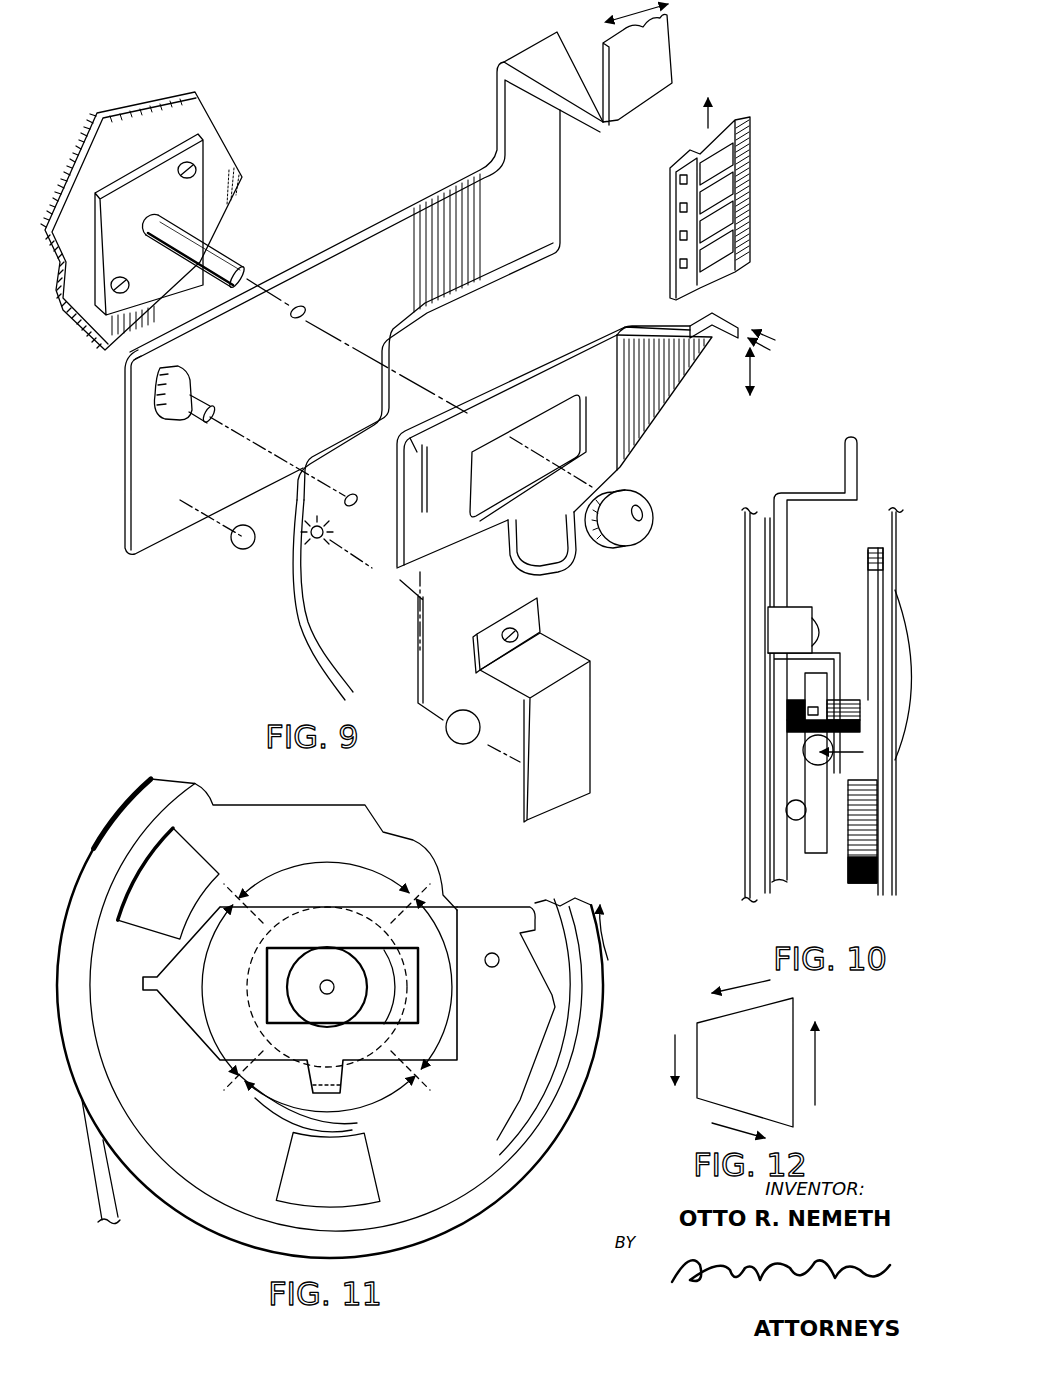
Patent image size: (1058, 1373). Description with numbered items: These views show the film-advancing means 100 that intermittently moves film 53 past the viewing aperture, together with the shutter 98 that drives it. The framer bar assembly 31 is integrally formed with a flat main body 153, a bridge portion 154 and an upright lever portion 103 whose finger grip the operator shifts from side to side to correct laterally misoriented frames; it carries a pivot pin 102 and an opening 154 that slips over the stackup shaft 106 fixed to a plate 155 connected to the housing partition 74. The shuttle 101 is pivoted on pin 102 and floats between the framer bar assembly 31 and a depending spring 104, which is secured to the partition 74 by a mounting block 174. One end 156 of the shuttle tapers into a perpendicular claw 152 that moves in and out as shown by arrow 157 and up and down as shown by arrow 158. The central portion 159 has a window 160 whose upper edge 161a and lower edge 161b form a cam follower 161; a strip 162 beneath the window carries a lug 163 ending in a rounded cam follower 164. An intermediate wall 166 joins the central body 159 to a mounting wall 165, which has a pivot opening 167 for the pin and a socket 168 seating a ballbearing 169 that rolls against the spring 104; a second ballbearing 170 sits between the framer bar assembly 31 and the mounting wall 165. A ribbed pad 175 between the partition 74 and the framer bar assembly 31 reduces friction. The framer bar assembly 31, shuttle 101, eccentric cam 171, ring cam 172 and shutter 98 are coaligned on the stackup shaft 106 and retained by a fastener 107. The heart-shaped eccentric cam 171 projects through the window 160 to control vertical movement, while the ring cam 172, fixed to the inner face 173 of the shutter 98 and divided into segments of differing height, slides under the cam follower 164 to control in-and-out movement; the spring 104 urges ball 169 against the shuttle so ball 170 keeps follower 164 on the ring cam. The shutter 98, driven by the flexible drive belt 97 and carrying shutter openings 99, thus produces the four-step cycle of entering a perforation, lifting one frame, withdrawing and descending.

In FIG. 9, the framer bar assembly 31 is at (116, 464).
In FIG. 10, the framer bar assembly 31 is at (790, 545).
In FIG. 9, the film 53 is at (665, 222).
In FIG. 9, the partition 74 is at (145, 124).
In FIG. 10, the partition 74 is at (760, 757).
In FIG. 11, the flexible drive belt 97 is at (112, 1218).
In FIG. 10, the shutter 98 is at (887, 527).
In FIG. 11, the shutter 98 is at (445, 840).
In FIG. 11, the shutter openings 99 is at (163, 870).
In FIG. 9, the film-advancing means 100 is at (482, 362).
In FIG. 10, the film-advancing means 100 is at (829, 627).
In FIG. 9, the shuttle 101 is at (680, 405).
In FIG. 10, the shuttle 101 is at (805, 877).
In FIG. 11, the shuttle 101 is at (490, 1100).
In FIG. 9, the pivot pin 102 is at (153, 390).
In FIG. 10, the pivot pin 102 is at (790, 700).
In FIG. 9, the upright lever portion 103 is at (627, 97).
In FIG. 10, the upright lever portion 103 is at (776, 493).
In FIG. 9, the spring 104 is at (585, 695).
In FIG. 10, the spring 104 is at (808, 610).
In FIG. 9, the stackup shaft 106 is at (224, 263).
In FIG. 10, the stackup shaft 106 is at (880, 592).
In FIG. 10, the fastener 107 is at (887, 625).
In FIG. 9, the claw 152 is at (727, 316).
In FIG. 11, the claw 152 is at (150, 990).
In FIG. 9, the flat main body 153 is at (403, 228).
In FIG. 9, the bridge portion 154 is at (545, 60).
In FIG. 10, the bridge portion 154 is at (818, 485).
In FIG. 9, the plate 155 is at (197, 187).
In FIG. 9, the end of shuttle 156 is at (670, 330).
In FIG. 9, the arrow 157 is at (775, 334).
In FIG. 9, the arrow 158 is at (758, 375).
In FIG. 9, the central portion 159 is at (630, 478).
In FIG. 9, the window 160 is at (542, 430).
In FIG. 11, the window 160 is at (410, 1007).
In FIG. 9, the cam follower 161 is at (612, 420).
In FIG. 11, the cam follower 161 is at (500, 962).
In FIG. 9, the upper edge 161a is at (575, 400).
In FIG. 11, the upper edge 161a is at (430, 960).
In FIG. 9, the lower edge 161b is at (540, 492).
In FIG. 11, the lower edge 161b is at (220, 1060).
In FIG. 9, the strip 162 is at (493, 537).
In FIG. 9, the lug 163 is at (557, 553).
In FIG. 9, the cam follower 164 is at (580, 553).
In FIG. 10, the cam follower 164 is at (848, 883).
In FIG. 11, the cam follower 164 is at (290, 1103).
In FIG. 9, the mounting wall 165 is at (330, 632).
In FIG. 9, the intermediate wall 166 is at (449, 424).
In FIG. 10, the intermediate wall 166 is at (818, 847).
In FIG. 9, the pivot opening 167 is at (355, 495).
In FIG. 9, the socket 168 is at (320, 540).
In FIG. 9, the ballbearing 169 is at (470, 710).
In FIG. 10, the ballbearing 169 is at (812, 760).
In FIG. 9, the ballbearing 170 is at (238, 548).
In FIG. 10, the ballbearing 170 is at (790, 812).
In FIG. 9, the eccentric cam 171 is at (628, 537).
In FIG. 10, the eccentric cam 171 is at (858, 672).
In FIG. 11, the eccentric cam 171 is at (272, 965).
In FIG. 10, the ring cam 172 is at (867, 597).
In FIG. 11, the ring cam 172 is at (358, 850).
In FIG. 10, the inner face 173 is at (890, 880).
In FIG. 11, the inner face 173 is at (453, 1170).
In FIG. 10, the mounting block 174 is at (783, 627).
In FIG. 10, the pad 175 is at (768, 713).